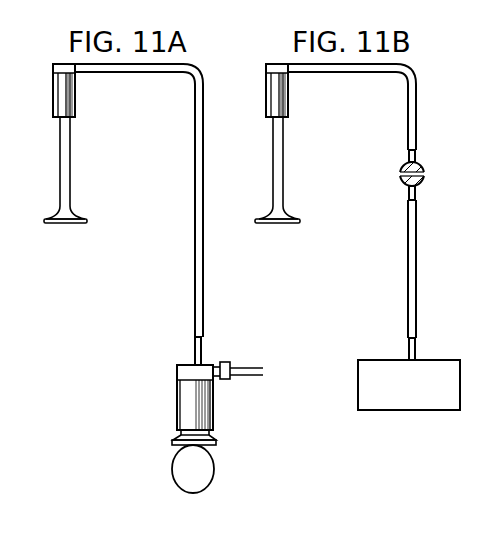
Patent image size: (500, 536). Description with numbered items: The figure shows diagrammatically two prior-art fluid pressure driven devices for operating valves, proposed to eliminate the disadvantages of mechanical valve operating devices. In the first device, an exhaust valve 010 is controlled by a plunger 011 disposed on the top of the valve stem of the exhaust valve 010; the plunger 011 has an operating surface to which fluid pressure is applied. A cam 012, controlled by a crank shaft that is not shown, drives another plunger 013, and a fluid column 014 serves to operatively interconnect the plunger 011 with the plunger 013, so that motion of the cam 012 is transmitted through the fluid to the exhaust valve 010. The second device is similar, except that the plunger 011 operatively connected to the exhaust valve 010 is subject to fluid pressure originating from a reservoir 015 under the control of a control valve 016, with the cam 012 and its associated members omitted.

In FIG. 11A, the exhaust valve 010 is at (68, 214).
In FIG. 11B, the exhaust valve 010 is at (281, 214).
In FIG. 11A, the plunger 011 is at (57, 93).
In FIG. 11B, the plunger 011 is at (270, 97).
In FIG. 11A, the cam 012 is at (209, 472).
In FIG. 11A, the plunger 013 is at (193, 408).
In FIG. 11A, the fluid column 014 is at (203, 258).
In FIG. 11B, the fluid column 014 is at (341, 212).
In FIG. 11B, the reservoir 015 is at (409, 385).
In FIG. 11B, the control valve 016 is at (423, 170).